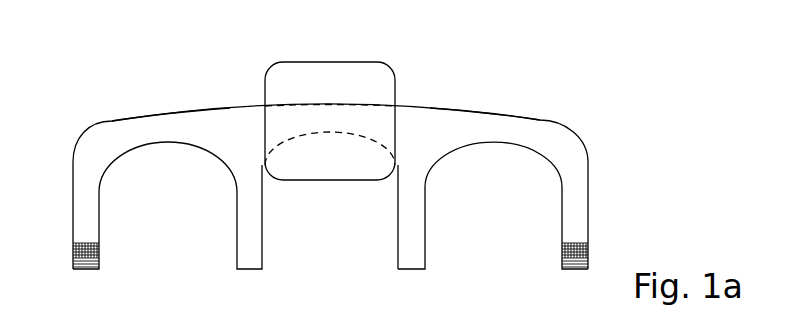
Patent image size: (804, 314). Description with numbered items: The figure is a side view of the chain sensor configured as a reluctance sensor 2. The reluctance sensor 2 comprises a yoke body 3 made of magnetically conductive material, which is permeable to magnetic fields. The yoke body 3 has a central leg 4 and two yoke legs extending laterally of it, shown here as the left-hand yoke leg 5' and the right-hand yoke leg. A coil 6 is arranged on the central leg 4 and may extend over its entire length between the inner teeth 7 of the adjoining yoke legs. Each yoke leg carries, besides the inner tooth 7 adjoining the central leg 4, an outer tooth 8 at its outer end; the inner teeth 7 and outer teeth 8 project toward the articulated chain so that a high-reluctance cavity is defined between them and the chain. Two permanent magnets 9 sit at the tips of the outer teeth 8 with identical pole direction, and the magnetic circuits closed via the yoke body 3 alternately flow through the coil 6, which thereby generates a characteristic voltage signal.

The reluctance sensor 2 is at (548, 118).
The yoke body 3 is at (422, 117).
The central leg 4 is at (258, 120).
The left-hand yoke leg 5' is at (171, 88).
The coil 6 is at (300, 70).
The inner tooth 7 is at (237, 195).
The outer tooth 8 is at (77, 172).
The permanent magnets 9 is at (75, 255).